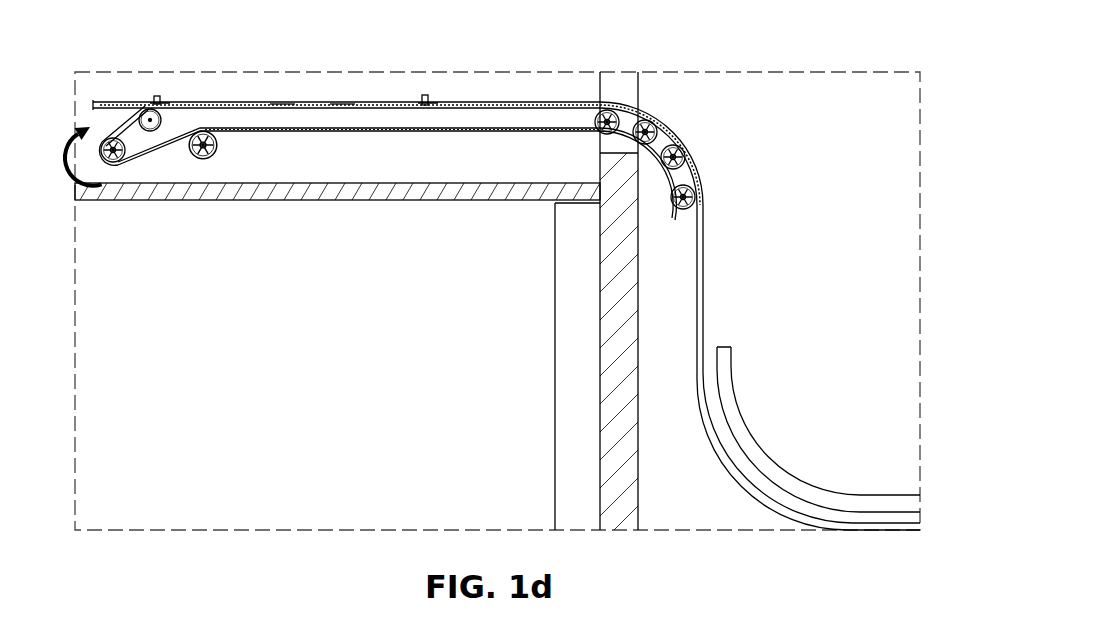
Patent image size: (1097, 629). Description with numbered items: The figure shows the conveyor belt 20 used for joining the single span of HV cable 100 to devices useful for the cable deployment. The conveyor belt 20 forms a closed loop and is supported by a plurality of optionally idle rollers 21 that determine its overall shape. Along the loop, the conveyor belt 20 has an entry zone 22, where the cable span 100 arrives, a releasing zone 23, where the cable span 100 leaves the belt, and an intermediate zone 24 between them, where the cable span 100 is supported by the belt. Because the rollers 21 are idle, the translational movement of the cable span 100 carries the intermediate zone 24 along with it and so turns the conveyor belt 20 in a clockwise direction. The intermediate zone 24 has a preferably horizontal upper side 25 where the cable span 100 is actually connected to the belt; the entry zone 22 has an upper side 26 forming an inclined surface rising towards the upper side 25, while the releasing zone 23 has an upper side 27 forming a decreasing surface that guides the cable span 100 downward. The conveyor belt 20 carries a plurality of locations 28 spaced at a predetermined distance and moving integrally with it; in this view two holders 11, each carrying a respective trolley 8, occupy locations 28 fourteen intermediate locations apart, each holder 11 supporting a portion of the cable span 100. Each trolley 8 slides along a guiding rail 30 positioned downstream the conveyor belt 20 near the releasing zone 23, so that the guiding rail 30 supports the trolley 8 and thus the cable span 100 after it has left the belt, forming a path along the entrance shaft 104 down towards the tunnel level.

The trolley 8 is at (158, 93).
The holder 11 is at (160, 105).
The conveyor belt 20 is at (408, 148).
The rollers 21 is at (200, 147).
The entry zone 22 is at (118, 127).
The releasing zone 23 is at (653, 105).
The intermediate zone 24 is at (490, 93).
The upper side of intermediate zone 25 is at (341, 108).
The upper side of entry zone 26 is at (110, 132).
The upper side of releasing zone 27 is at (687, 175).
The locations 28 is at (280, 108).
The guiding rail 30 is at (742, 422).
The HV cable 100 is at (700, 272).
The entrance shaft 104 is at (833, 230).